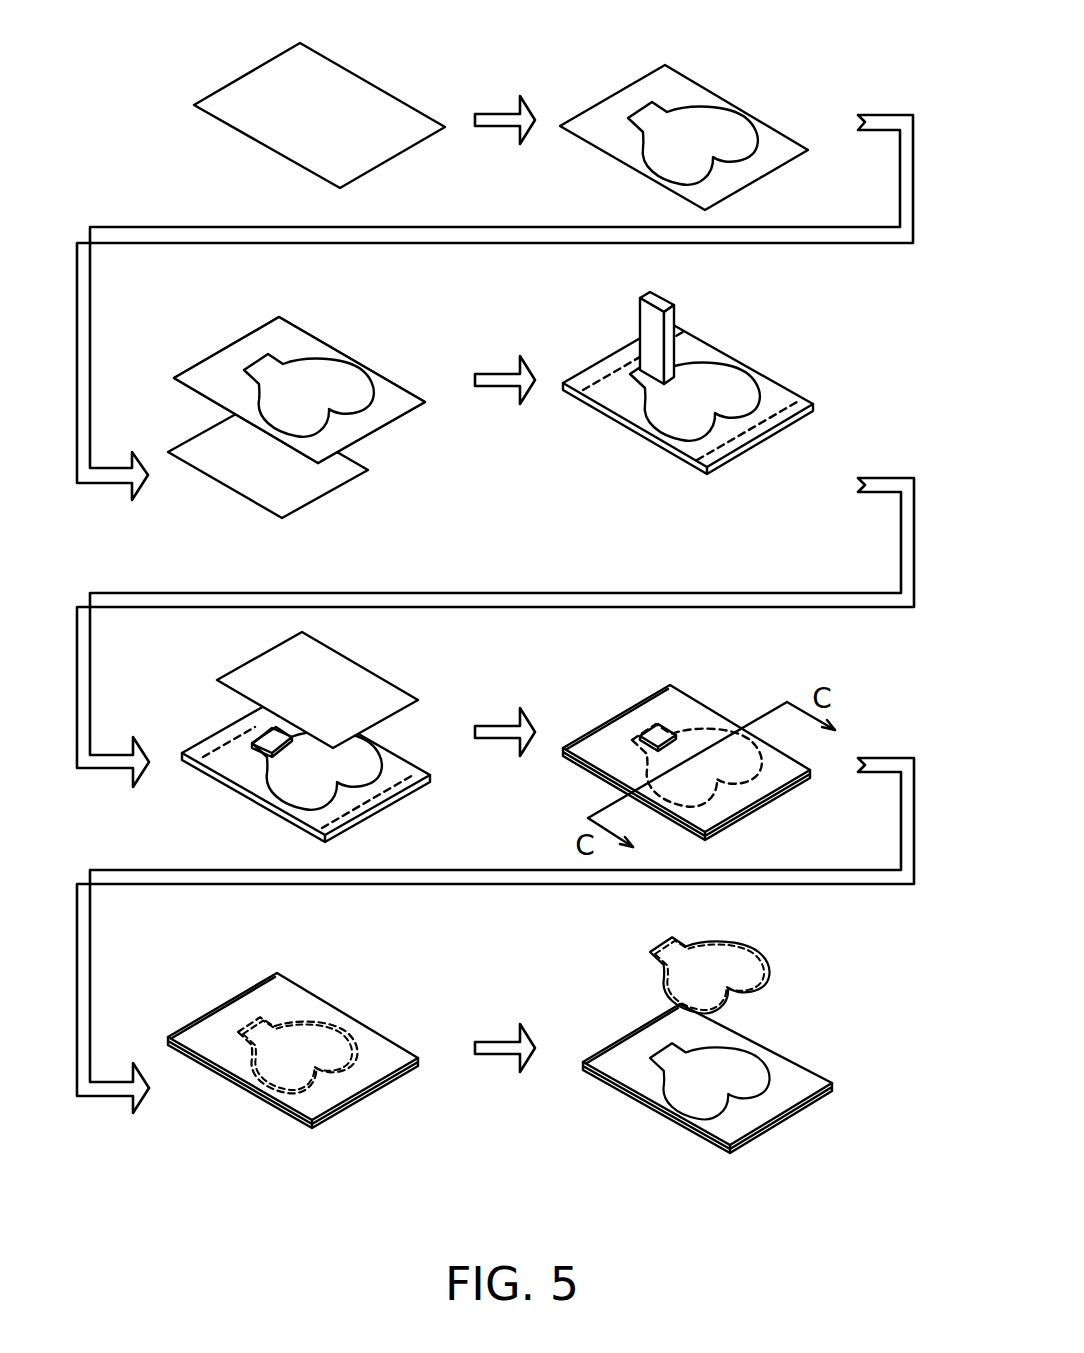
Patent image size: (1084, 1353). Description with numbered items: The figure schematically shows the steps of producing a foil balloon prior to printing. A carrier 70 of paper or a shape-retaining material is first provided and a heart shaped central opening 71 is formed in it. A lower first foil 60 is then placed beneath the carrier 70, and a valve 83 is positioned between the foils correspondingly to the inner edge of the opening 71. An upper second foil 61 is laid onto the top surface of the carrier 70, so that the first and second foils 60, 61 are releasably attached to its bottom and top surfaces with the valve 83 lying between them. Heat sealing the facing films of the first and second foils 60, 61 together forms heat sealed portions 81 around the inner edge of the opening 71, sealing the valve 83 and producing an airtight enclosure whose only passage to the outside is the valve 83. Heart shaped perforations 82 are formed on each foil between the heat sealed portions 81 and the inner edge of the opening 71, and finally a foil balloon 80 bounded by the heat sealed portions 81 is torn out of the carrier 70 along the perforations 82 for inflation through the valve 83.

The first foil 60 is at (348, 475).
The second foil 61 is at (392, 689).
The carrier 70 is at (251, 85).
The central opening 71 is at (718, 114).
The foil balloon 80 is at (760, 963).
The heat sealed portions 81 is at (312, 1025).
The heart shaped perforations 82 is at (295, 990).
The valve 83 is at (650, 298).